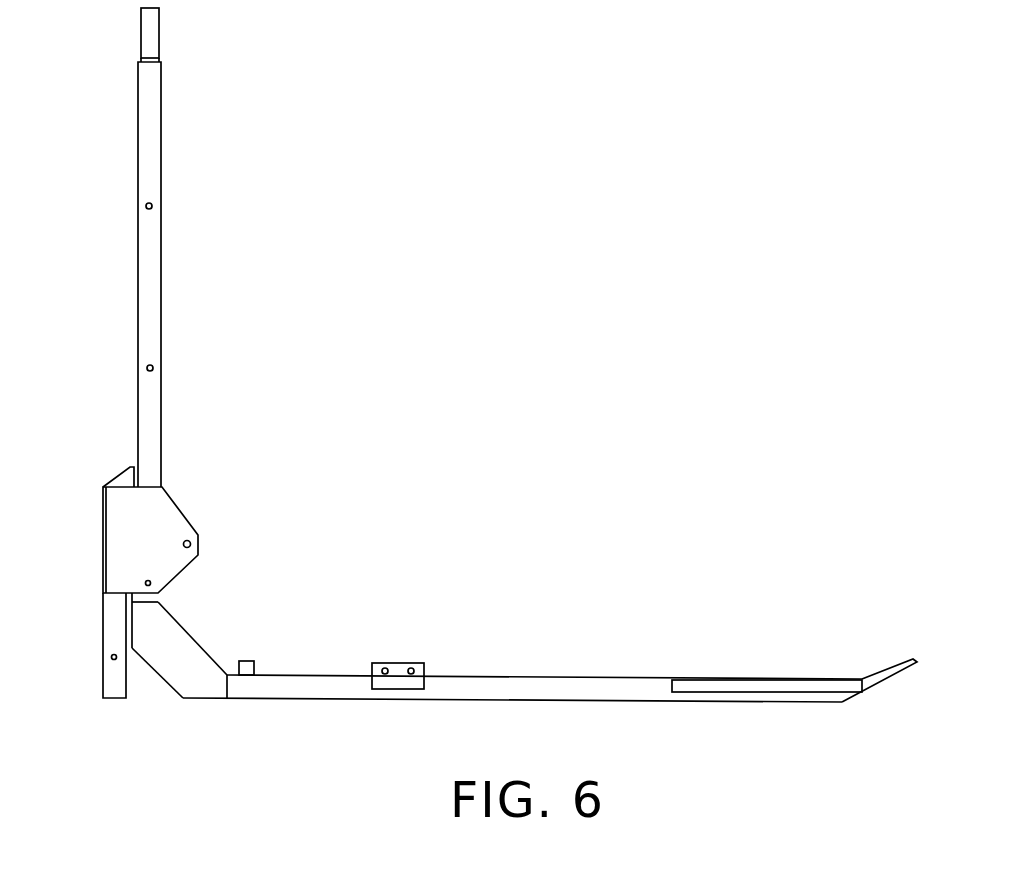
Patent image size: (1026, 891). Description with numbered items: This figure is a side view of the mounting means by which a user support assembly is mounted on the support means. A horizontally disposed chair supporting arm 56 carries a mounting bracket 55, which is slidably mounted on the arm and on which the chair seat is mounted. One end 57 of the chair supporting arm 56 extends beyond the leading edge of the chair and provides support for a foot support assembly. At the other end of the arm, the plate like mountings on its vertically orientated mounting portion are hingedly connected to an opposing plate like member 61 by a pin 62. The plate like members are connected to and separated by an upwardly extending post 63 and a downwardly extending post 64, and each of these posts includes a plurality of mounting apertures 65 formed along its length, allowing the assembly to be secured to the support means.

The mounting bracket 55 is at (403, 663).
The chair supporting arm 56 is at (613, 691).
The end of the chair supporting arm 57 is at (823, 693).
The plate like member 61 is at (168, 518).
The pin 62 is at (191, 544).
The upwardly extending post 63 is at (161, 298).
The downwardly extending post 64 is at (110, 630).
The mounting apertures 65 is at (152, 206).